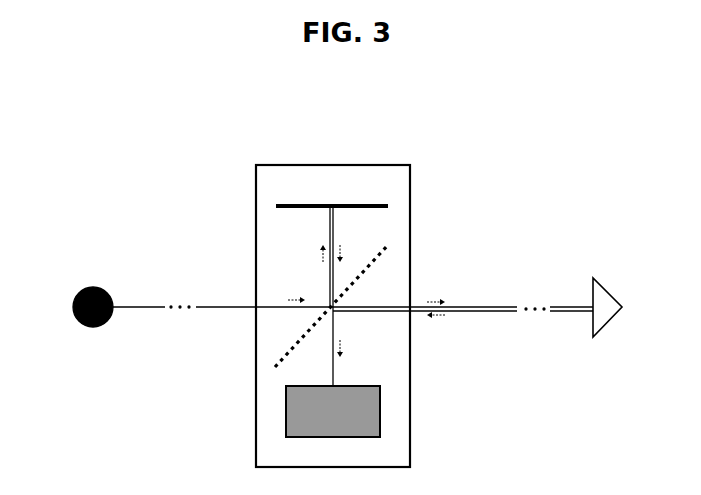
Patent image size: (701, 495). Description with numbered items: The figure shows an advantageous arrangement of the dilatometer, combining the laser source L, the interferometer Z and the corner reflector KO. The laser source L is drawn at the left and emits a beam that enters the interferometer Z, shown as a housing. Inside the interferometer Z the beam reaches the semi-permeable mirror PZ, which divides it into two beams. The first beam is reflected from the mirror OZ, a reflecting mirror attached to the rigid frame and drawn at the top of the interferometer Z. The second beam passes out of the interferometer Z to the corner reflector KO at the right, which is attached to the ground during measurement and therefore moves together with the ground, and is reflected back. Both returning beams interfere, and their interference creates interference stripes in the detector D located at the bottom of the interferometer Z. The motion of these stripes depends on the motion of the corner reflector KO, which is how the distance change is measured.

The interferometer Z is at (380, 165).
The mirror OZ is at (363, 206).
The semi-permeable mirror PZ is at (372, 264).
The laser source L is at (83, 327).
The detector D is at (364, 423).
The corner reflector KO is at (605, 295).